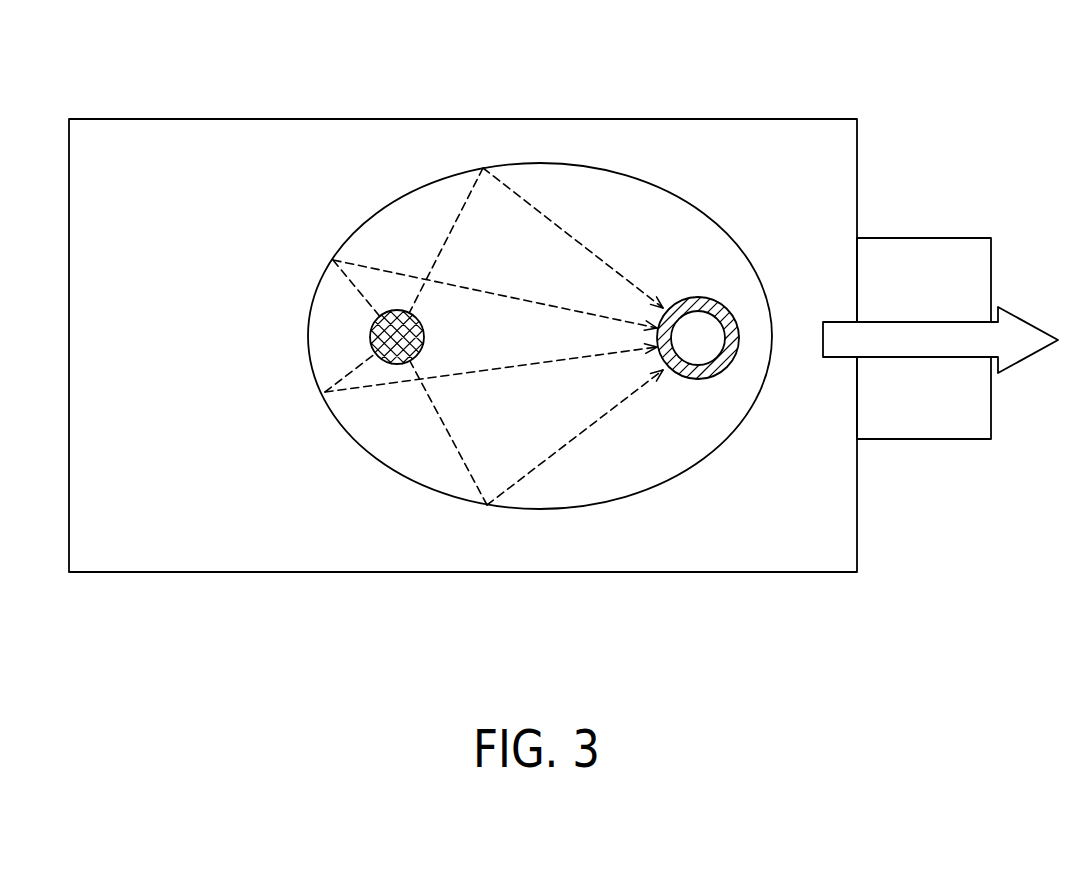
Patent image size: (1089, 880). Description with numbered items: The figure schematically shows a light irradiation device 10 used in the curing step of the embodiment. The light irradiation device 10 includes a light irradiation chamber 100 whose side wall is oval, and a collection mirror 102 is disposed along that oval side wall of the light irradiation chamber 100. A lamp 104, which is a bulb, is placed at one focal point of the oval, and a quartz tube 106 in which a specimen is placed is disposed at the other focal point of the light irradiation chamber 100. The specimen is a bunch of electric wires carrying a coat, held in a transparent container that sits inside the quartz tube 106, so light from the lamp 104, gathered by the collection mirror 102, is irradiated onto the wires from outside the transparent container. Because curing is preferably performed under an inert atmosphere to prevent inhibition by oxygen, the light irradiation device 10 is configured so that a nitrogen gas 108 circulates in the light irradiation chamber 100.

The light irradiation device 10 is at (848, 105).
The light irradiation chamber 100 is at (577, 495).
The collection mirror 102 is at (593, 163).
The lamp 104 is at (371, 333).
The quartz tube 106 is at (698, 297).
The nitrogen gas 108 is at (917, 333).